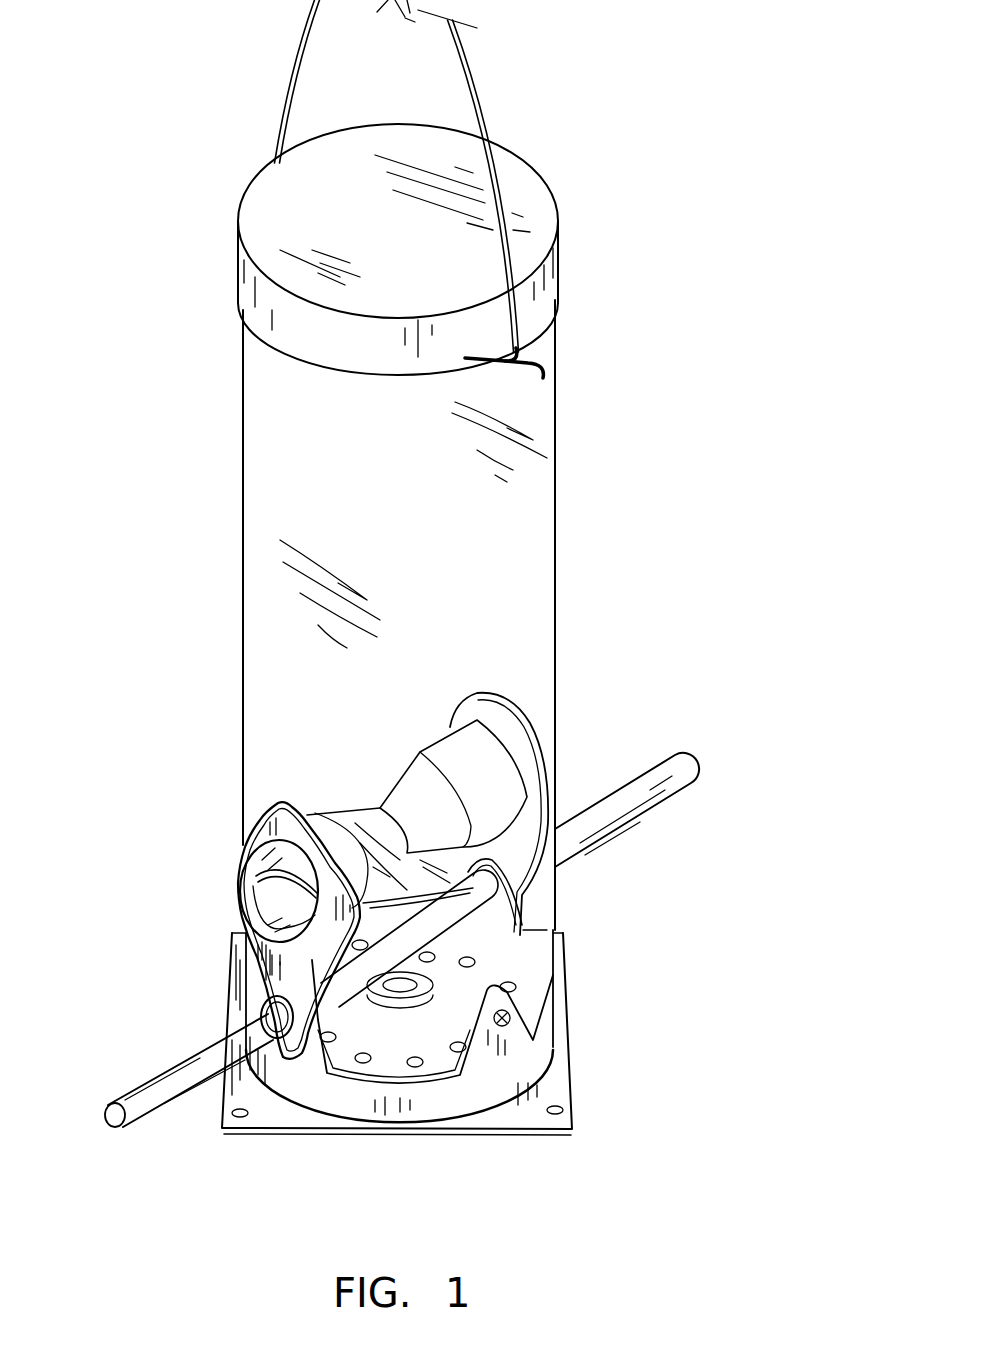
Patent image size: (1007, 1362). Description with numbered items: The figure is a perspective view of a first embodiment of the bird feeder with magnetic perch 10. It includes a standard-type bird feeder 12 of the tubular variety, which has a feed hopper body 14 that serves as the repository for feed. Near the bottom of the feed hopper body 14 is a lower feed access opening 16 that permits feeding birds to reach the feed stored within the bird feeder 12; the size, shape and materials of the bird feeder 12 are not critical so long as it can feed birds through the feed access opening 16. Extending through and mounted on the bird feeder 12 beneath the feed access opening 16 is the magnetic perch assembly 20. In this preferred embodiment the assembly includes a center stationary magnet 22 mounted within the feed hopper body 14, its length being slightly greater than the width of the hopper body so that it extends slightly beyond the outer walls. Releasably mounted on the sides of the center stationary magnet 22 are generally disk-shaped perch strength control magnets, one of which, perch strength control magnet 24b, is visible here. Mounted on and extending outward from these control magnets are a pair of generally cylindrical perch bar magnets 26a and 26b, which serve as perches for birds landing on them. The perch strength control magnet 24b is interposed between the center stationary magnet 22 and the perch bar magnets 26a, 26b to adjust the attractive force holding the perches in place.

The bird feeder with magnetic perch 10 is at (588, 702).
The bird feeder 12 is at (493, 500).
The feed hopper body 14 is at (400, 684).
The feed access opening 16 is at (264, 888).
The magnetic perch assembly 20 is at (156, 1065).
The center stationary magnet 22 is at (443, 922).
The perch strength control magnet 24b is at (275, 1045).
The perch bar magnet 26a is at (207, 1067).
The perch bar magnet 26b is at (640, 812).